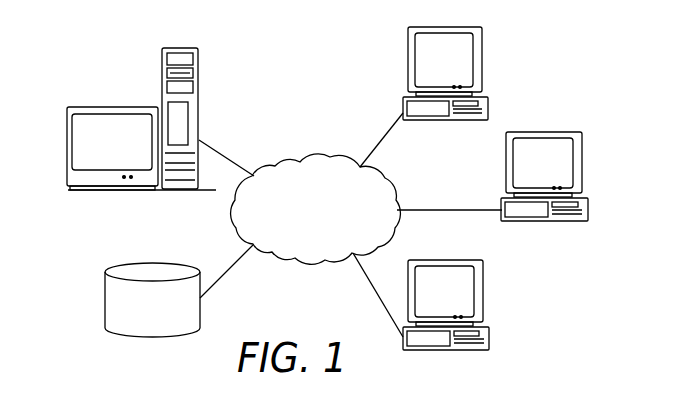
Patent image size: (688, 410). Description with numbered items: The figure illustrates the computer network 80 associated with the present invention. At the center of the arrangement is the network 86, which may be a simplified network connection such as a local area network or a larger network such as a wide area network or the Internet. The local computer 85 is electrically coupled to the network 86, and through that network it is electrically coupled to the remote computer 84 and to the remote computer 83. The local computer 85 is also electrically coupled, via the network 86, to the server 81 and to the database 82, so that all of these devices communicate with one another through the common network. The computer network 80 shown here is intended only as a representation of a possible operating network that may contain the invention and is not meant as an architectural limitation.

The computer network 80 is at (278, 68).
The server 81 is at (118, 107).
The database 82 is at (105, 300).
The remote computer 83 is at (485, 290).
The remote computer 84 is at (583, 163).
The local computer 85 is at (484, 60).
The network 86 is at (329, 227).